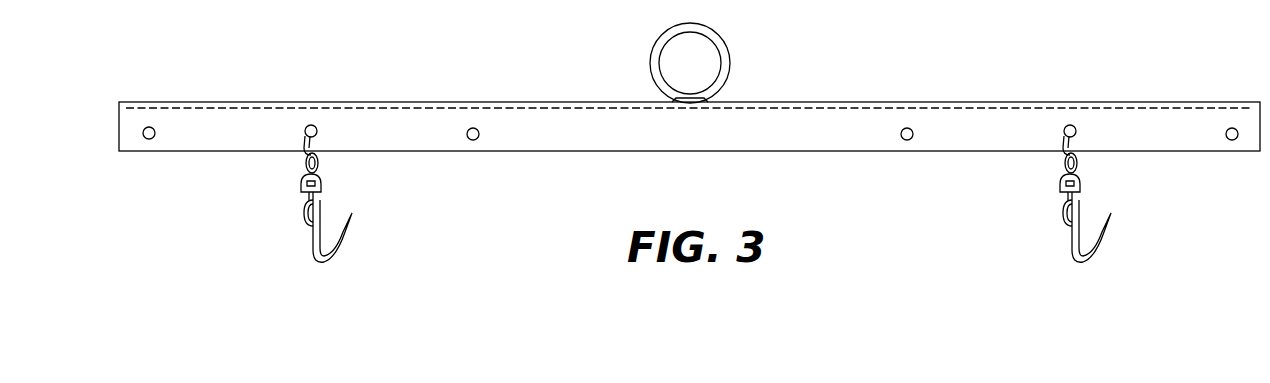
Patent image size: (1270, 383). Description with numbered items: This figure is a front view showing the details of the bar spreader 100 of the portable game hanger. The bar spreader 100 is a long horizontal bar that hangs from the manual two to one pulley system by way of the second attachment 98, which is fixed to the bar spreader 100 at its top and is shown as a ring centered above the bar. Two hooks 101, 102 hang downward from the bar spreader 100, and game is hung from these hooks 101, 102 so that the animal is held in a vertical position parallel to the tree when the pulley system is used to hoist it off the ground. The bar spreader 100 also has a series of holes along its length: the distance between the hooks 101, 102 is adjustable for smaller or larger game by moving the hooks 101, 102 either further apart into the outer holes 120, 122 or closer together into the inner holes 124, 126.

The second attachment 98 is at (729, 52).
The bar spreader 100 is at (528, 101).
The hook 101 is at (320, 213).
The hook 102 is at (1079, 213).
The hole 120 is at (1232, 141).
The hole 122 is at (147, 140).
The hole 124 is at (907, 141).
The hole 126 is at (472, 141).